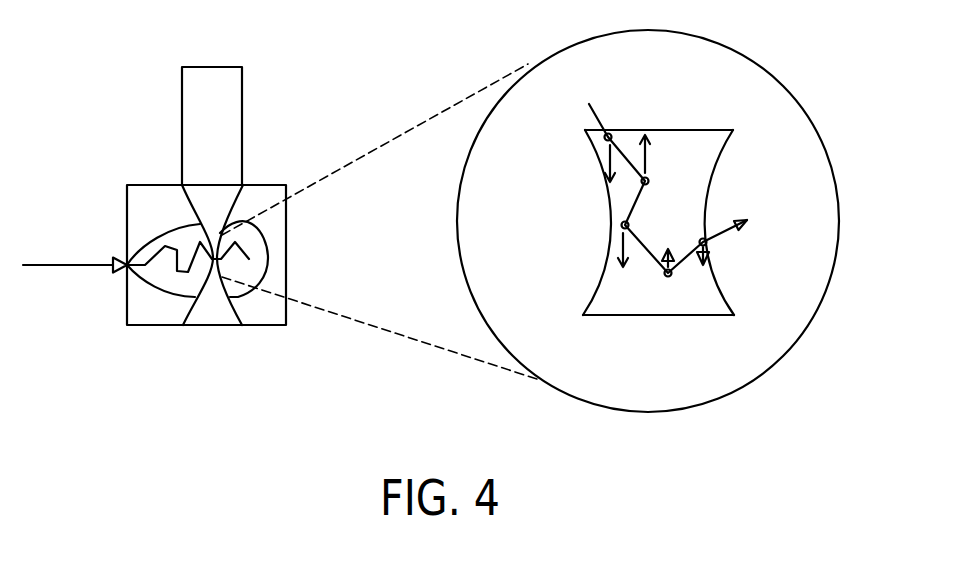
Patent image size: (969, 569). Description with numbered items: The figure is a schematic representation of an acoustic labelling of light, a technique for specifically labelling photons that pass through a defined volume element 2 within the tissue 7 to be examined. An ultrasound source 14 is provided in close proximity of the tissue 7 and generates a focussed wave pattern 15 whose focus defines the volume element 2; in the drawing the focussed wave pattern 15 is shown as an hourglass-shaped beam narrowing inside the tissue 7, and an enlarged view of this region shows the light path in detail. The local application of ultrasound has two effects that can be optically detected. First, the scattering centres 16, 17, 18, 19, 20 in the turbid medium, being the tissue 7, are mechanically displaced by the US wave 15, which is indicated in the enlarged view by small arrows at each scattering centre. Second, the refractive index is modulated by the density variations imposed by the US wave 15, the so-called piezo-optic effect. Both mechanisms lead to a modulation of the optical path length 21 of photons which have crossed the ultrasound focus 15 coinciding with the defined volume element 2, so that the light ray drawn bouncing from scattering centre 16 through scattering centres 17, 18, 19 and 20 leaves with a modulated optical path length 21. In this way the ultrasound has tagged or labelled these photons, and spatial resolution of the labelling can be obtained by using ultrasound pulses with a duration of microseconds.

The volume element 2 is at (715, 150).
The tissue 7 is at (148, 203).
The ultrasound source 14 is at (233, 102).
The focussed wave pattern 15 is at (220, 205).
The scattering centre 16 is at (608, 137).
The scattering centre 17 is at (645, 181).
The scattering centre 18 is at (625, 225).
The scattering centre 19 is at (668, 273).
The scattering centre 20 is at (703, 242).
The optical path length 21 is at (590, 105).